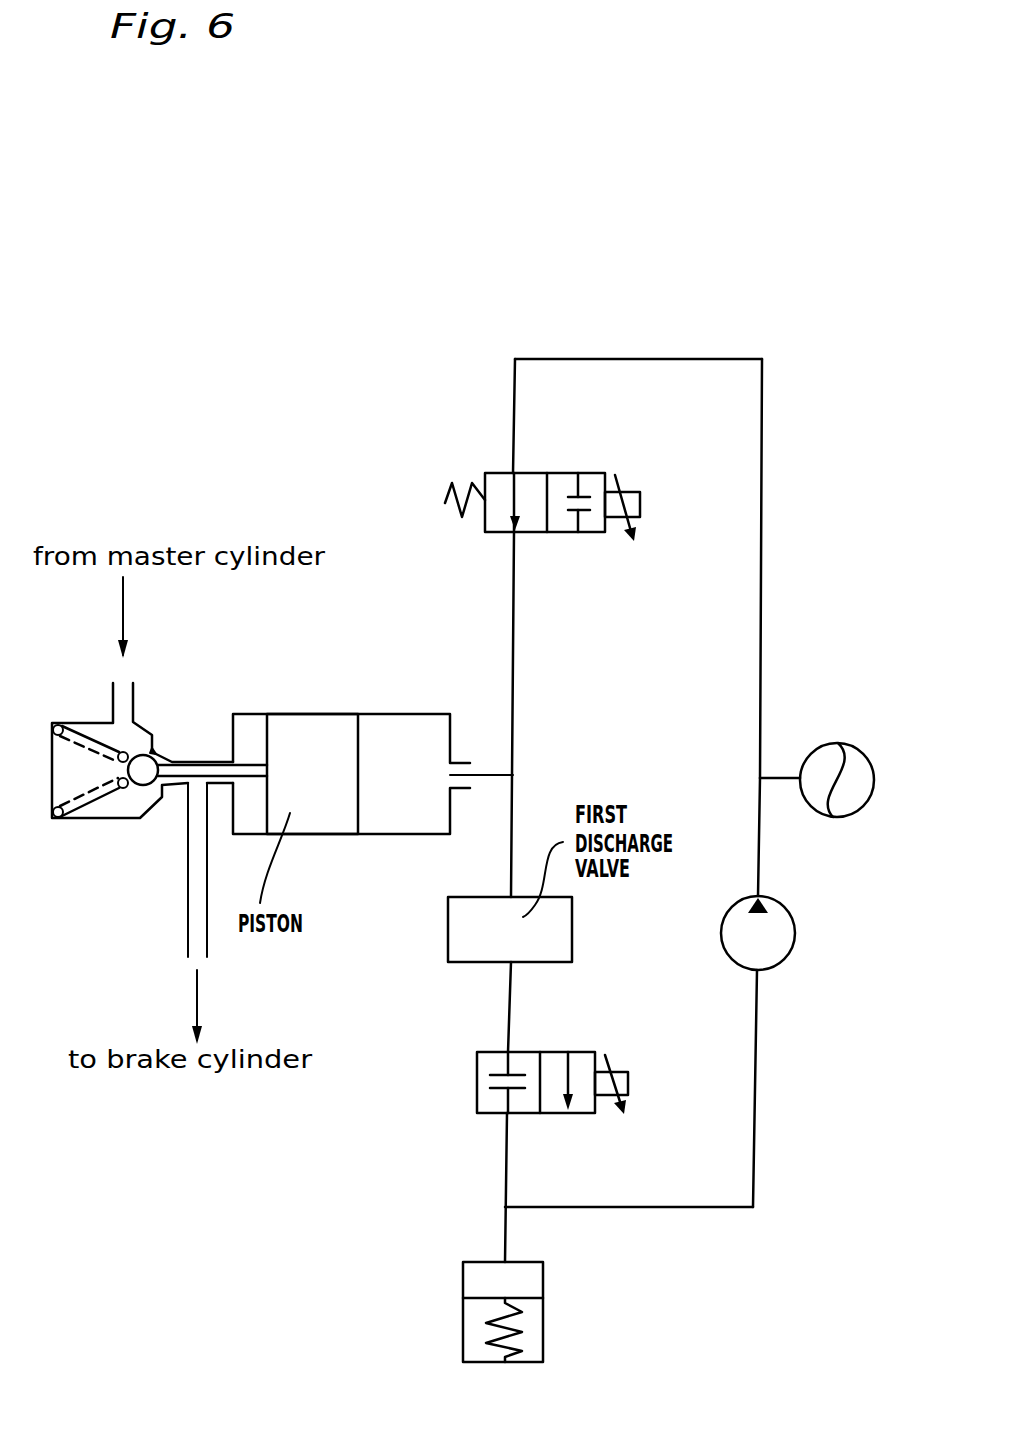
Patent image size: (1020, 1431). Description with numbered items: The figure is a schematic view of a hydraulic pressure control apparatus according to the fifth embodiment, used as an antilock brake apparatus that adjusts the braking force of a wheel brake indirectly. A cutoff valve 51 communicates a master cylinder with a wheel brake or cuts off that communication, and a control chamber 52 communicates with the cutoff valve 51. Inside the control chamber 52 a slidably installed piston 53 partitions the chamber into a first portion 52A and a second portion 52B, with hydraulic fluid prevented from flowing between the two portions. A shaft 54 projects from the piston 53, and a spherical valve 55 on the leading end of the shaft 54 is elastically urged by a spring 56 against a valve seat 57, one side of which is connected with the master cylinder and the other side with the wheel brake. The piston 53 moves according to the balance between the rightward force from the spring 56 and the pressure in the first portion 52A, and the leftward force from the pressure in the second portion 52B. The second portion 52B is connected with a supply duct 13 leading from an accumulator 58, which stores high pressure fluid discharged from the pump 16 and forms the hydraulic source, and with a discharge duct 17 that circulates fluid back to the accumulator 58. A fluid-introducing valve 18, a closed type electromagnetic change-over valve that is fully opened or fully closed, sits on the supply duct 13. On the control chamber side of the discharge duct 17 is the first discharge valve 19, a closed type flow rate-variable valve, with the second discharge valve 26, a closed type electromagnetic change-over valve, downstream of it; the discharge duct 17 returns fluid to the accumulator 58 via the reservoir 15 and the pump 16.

The supply duct 13 is at (618, 359).
The reservoir 15 is at (463, 1317).
The pump 16 is at (790, 955).
The discharge duct 17 is at (630, 1207).
The fluid-introducing valve 18 is at (535, 473).
The first discharge valve 19 is at (448, 943).
The second discharge valve 26 is at (477, 1075).
The cutoff valve 51 is at (120, 820).
The control chamber 52 is at (380, 714).
The first portion 52A is at (252, 714).
The second portion 52B is at (410, 714).
The piston 53 is at (310, 828).
The shaft 54 is at (200, 760).
The spherical valve 55 is at (155, 797).
The spring 56 is at (82, 814).
The valve seat 57 is at (155, 748).
The accumulator 58 is at (820, 745).